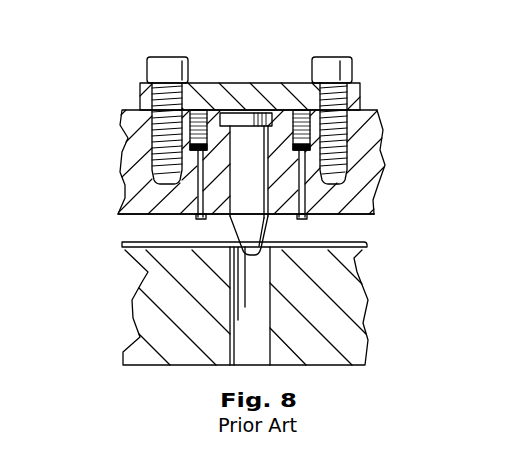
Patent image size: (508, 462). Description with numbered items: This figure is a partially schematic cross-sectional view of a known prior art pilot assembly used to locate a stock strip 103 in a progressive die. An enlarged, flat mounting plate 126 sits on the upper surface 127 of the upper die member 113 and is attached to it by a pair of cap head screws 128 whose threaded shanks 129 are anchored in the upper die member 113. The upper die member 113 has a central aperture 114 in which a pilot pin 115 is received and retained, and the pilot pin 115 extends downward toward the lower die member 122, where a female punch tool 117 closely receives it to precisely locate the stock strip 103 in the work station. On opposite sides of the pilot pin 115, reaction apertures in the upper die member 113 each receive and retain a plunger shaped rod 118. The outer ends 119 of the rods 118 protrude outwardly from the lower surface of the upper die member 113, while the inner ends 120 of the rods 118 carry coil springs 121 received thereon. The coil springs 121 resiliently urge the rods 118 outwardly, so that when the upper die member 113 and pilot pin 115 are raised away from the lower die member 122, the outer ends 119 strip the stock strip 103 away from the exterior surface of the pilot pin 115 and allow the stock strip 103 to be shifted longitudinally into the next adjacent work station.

The stock strip 103 is at (128, 251).
The upper die member 113 is at (380, 151).
The central aperture 114 is at (232, 137).
The pilot pin 115 is at (258, 227).
The female punch tool 117 is at (253, 353).
The plunger shaped rod 118 is at (198, 213).
The outer end 119 is at (197, 217).
The inner end 120 is at (297, 110).
The coil spring 121 is at (383, 184).
The lower die member 122 is at (364, 303).
The mounting plate 126 is at (267, 83).
The upper surface 127 is at (368, 108).
The cap head screw 128 is at (158, 57).
The threaded shank 129 is at (152, 139).